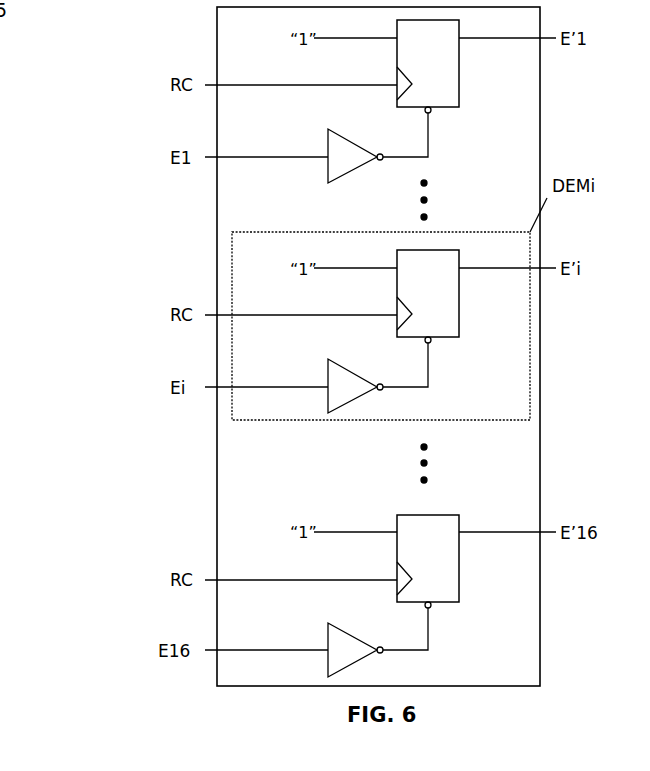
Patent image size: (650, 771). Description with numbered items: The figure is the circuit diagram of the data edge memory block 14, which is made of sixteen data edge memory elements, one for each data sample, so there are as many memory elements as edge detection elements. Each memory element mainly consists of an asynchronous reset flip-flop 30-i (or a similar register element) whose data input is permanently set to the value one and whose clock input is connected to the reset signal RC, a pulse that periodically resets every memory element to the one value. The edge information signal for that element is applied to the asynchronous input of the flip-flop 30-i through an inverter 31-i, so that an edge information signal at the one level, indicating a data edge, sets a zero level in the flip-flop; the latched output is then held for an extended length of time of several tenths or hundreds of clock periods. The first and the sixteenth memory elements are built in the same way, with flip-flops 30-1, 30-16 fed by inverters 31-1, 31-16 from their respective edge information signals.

The data edge memory block 14 is at (68, 217).
The asynchronous reset flip-flop 30-1 is at (459, 90).
The asynchronous reset flip-flop 30-i is at (459, 320).
The asynchronous reset flip-flop 30-16 is at (459, 583).
The inverter 31-1 is at (365, 147).
The inverter 31-i is at (365, 377).
The inverter 31-16 is at (365, 641).